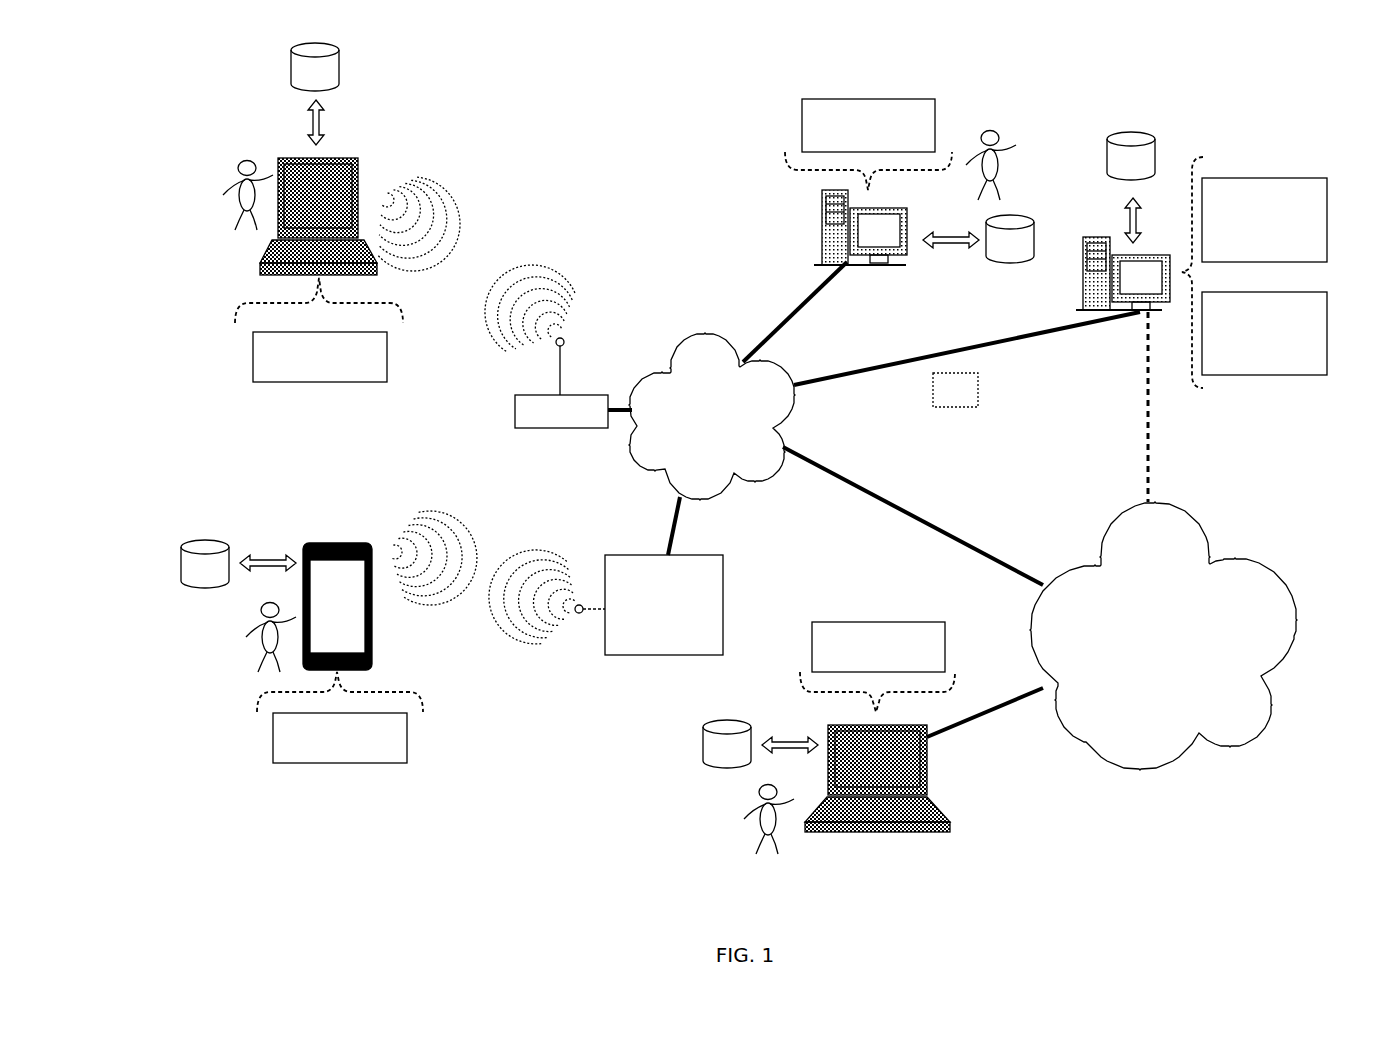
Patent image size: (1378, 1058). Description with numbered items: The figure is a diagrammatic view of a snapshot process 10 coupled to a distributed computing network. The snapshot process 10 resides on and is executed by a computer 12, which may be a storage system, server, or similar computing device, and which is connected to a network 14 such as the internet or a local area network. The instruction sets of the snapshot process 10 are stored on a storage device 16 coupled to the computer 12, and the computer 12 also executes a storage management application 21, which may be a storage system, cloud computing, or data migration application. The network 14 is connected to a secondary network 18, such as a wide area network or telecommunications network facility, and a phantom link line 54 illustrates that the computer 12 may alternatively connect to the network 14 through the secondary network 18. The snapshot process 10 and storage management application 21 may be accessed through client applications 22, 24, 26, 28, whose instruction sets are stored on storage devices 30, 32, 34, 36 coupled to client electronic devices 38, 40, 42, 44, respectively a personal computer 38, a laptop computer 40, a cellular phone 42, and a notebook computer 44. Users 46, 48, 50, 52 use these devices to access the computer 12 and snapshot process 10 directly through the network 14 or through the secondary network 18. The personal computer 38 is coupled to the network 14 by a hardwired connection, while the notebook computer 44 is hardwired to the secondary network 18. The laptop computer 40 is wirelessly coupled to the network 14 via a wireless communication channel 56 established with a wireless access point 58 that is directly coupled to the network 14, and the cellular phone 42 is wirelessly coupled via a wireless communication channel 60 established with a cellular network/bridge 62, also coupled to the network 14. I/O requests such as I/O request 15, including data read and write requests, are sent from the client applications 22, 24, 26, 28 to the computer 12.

The snapshot process 10 is at (1327, 208).
The computer 12 is at (1085, 248).
The network 14 is at (712, 416).
The I/O request 15 is at (933, 390).
The storage device 16 is at (1131, 156).
The secondary network 18 is at (1163, 636).
The storage management application 21 is at (1327, 322).
The client application 22 is at (935, 128).
The client application 24 is at (387, 366).
The client application 26 is at (407, 740).
The client application 28 is at (945, 650).
The storage device 30 is at (1010, 239).
The storage device 32 is at (315, 67).
The storage device 34 is at (205, 564).
The storage device 36 is at (727, 744).
The client electronic device 38 is at (813, 217).
The client electronic device 40 is at (358, 178).
The client electronic device 42 is at (372, 590).
The client electronic device 44 is at (927, 770).
The user 46 is at (1010, 143).
The user 48 is at (212, 183).
The user 50 is at (245, 620).
The user 52 is at (732, 810).
The phantom link line 54 is at (1118, 382).
The wireless communication channel 56 is at (509, 230).
The wireless access point 58 is at (508, 410).
The wireless communication channel 60 is at (492, 556).
The cellular network/bridge 62 is at (723, 572).